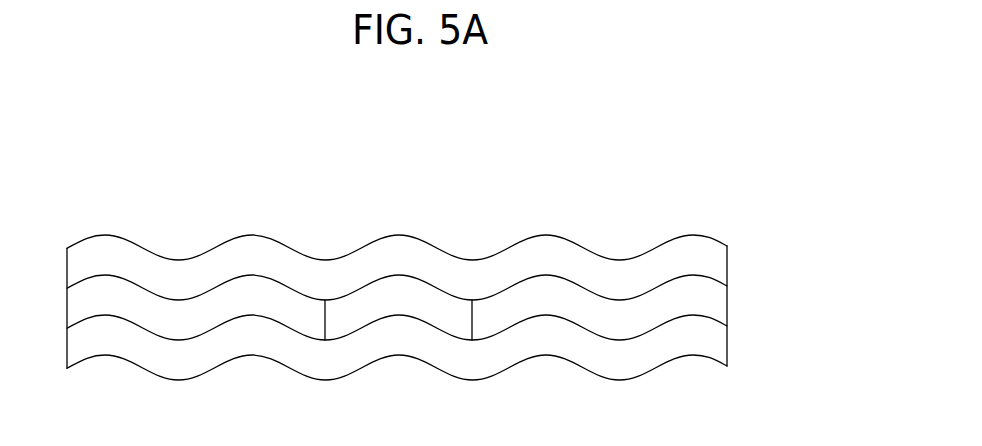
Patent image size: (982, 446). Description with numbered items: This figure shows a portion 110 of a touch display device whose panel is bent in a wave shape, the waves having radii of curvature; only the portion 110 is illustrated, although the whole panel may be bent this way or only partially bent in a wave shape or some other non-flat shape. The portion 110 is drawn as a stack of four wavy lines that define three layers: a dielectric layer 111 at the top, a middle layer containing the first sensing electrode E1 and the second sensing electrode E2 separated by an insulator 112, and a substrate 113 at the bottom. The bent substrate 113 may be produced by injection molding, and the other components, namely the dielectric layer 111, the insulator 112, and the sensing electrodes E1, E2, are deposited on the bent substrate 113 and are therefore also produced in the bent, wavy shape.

The portion of the touch display device 110 is at (203, 167).
The dielectric layer 111 is at (718, 263).
The insulator 112 is at (429, 304).
The substrate 113 is at (718, 346).
The first sensing electrode E1 is at (179, 321).
The second sensing electrode E2 is at (620, 321).